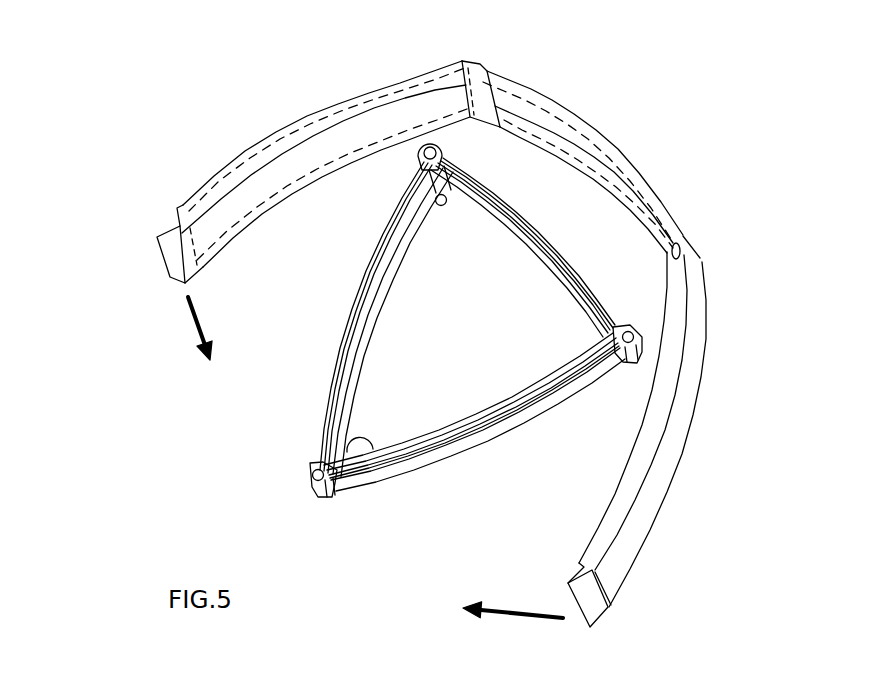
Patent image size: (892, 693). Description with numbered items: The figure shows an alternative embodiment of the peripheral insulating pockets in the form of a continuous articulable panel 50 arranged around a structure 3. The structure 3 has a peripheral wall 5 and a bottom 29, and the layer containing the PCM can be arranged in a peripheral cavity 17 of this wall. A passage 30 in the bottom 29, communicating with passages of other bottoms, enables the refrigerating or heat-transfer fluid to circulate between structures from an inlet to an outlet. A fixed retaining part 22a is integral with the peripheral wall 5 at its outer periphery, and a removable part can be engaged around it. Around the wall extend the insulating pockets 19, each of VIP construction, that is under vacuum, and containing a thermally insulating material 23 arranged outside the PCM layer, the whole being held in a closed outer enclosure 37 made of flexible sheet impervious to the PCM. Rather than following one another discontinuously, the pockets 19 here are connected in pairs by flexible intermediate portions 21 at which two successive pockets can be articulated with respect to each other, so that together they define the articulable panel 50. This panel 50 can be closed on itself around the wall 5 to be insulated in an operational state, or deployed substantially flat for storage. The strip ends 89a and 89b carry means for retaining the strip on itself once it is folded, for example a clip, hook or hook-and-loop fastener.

The structure 3 is at (490, 312).
The peripheral wall 5 is at (390, 257).
The peripheral cavity 17 is at (568, 258).
The insulating pocket 19 is at (315, 125).
The flexible intermediate portion 21 is at (472, 70).
The fixed part of retaining protrusion 22a is at (678, 245).
The thermally insulating material 23 is at (387, 123).
The bottom 29 is at (469, 304).
The passage 30 is at (357, 442).
The closed outer enclosure 37 is at (753, 425).
The articulable panel 50 is at (435, 339).
The retaining means 89a is at (177, 232).
The retaining means 89b is at (593, 605).